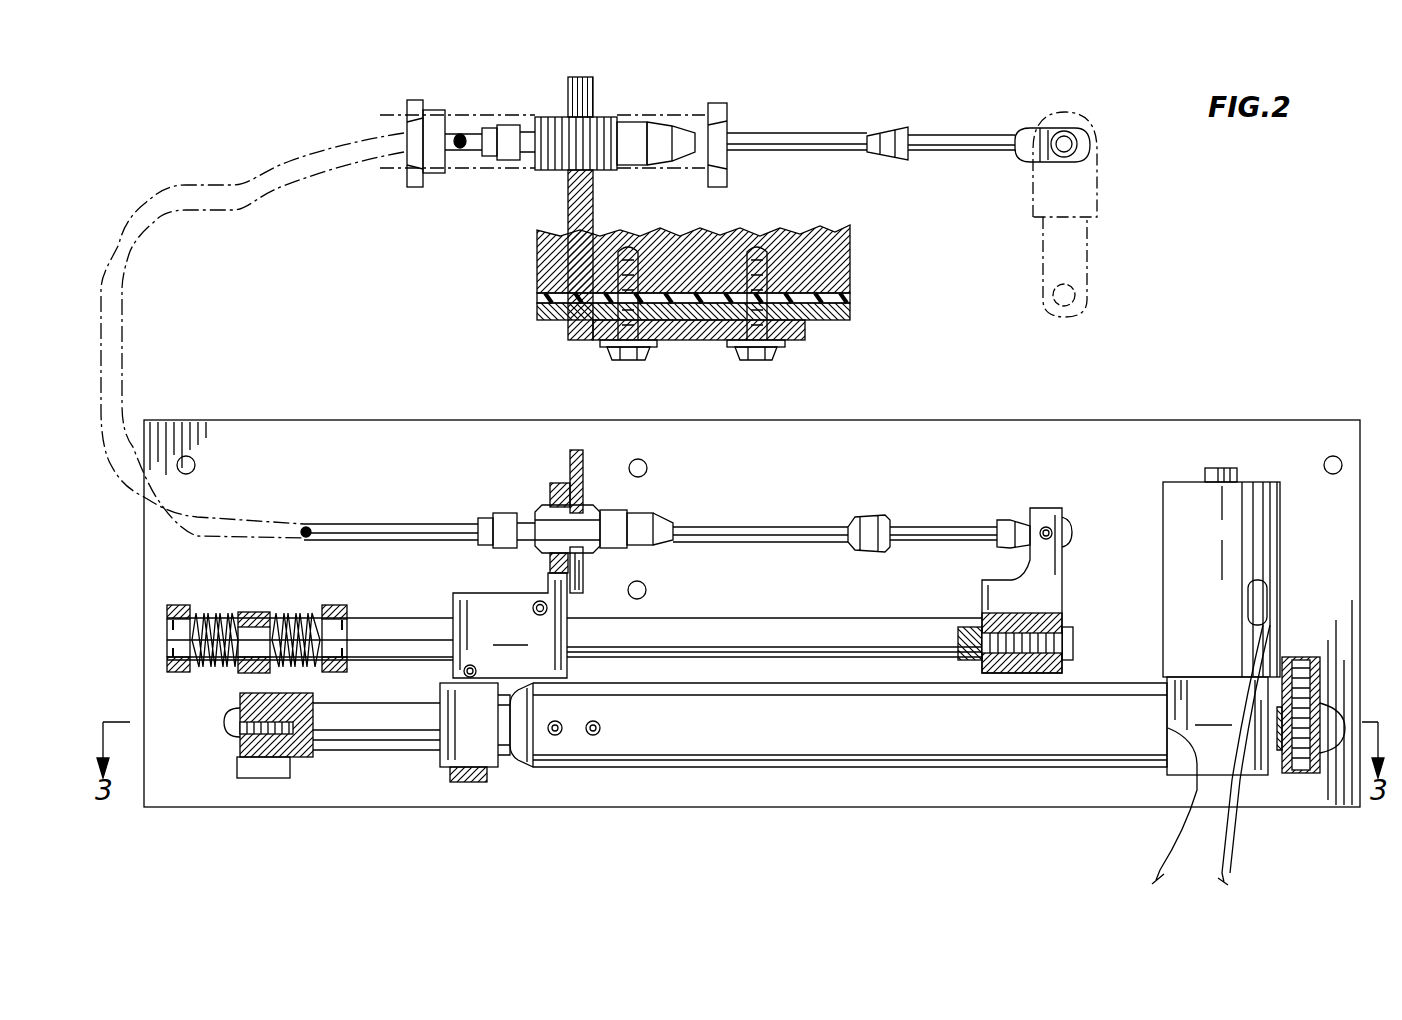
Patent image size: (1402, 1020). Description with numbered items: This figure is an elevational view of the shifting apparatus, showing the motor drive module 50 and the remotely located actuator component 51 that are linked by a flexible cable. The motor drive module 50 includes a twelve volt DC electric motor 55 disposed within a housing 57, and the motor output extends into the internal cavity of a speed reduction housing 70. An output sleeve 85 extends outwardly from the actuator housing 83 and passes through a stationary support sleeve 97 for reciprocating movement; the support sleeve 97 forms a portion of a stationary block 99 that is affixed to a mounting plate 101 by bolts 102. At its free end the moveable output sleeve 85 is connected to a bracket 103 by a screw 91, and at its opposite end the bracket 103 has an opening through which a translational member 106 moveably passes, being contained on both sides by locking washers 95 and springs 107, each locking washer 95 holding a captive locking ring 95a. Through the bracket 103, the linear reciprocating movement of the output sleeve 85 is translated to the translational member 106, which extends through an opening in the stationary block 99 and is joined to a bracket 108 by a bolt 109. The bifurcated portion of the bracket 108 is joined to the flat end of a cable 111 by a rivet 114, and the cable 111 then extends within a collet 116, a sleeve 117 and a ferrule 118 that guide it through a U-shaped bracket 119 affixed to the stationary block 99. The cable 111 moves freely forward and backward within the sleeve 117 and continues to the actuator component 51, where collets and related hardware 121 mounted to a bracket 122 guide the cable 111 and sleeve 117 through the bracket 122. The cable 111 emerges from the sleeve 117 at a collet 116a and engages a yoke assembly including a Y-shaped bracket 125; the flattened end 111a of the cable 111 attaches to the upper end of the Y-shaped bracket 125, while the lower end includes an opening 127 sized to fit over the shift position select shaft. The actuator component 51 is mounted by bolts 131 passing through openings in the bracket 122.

The motor drive module 50 is at (940, 400).
The actuator component 51 is at (642, 102).
The DC electric motor 55 is at (1166, 466).
The housing 57 is at (1170, 518).
The speed reduction housing 70 is at (1248, 755).
The actuator housing 83 is at (830, 740).
The output sleeve 85 is at (345, 738).
The screw 91 is at (230, 722).
The locking washer 95 is at (185, 600).
The captive locking ring 95a is at (170, 620).
The support sleeve 97 is at (440, 757).
The stationary block 99 is at (510, 625).
The mounting plate 101 is at (236, 419).
The bolts 102 is at (538, 603).
The bracket 103 is at (262, 762).
The translational member 106 is at (765, 633).
The springs 107 is at (256, 612).
The bracket 108 is at (1047, 587).
The bolt 109 is at (1072, 643).
The cable 111 is at (938, 132).
The flattened end 111a is at (1086, 127).
The rivet 114 is at (1045, 528).
The collet 116 is at (880, 515).
The collet 116a is at (893, 162).
The sleeve 117 is at (129, 295).
The ferrule 118 is at (643, 518).
The U-shaped bracket 119 is at (568, 452).
The collets and related hardware 121 is at (510, 128).
The bracket 122 is at (566, 190).
The Y-shaped bracket 125 is at (1100, 190).
The opening 127 is at (1075, 300).
The bolts 131 is at (633, 360).